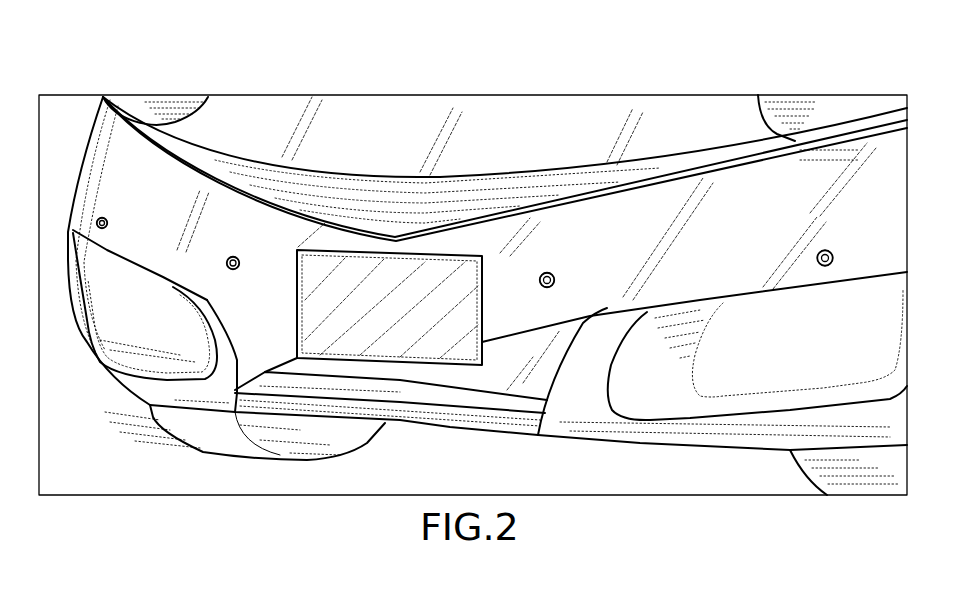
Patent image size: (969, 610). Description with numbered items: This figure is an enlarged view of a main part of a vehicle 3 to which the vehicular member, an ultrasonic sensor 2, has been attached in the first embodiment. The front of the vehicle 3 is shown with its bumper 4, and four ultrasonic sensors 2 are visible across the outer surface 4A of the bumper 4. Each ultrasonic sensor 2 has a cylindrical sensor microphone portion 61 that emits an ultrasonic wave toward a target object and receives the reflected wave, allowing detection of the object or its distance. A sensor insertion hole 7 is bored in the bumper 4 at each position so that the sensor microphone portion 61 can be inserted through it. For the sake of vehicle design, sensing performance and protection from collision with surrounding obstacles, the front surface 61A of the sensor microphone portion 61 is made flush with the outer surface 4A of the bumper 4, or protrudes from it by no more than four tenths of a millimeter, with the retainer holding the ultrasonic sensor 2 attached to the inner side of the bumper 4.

The ultrasonic sensor 2 is at (106, 219).
The vehicle 3 is at (576, 104).
The bumper 4 is at (825, 93).
The outer surface of the bumper 4A is at (832, 167).
The sensor insertion hole 7 is at (108, 228).
The sensor microphone portion 61 is at (436, 162).
The front surface of the sensor microphone portion 61A is at (100, 221).